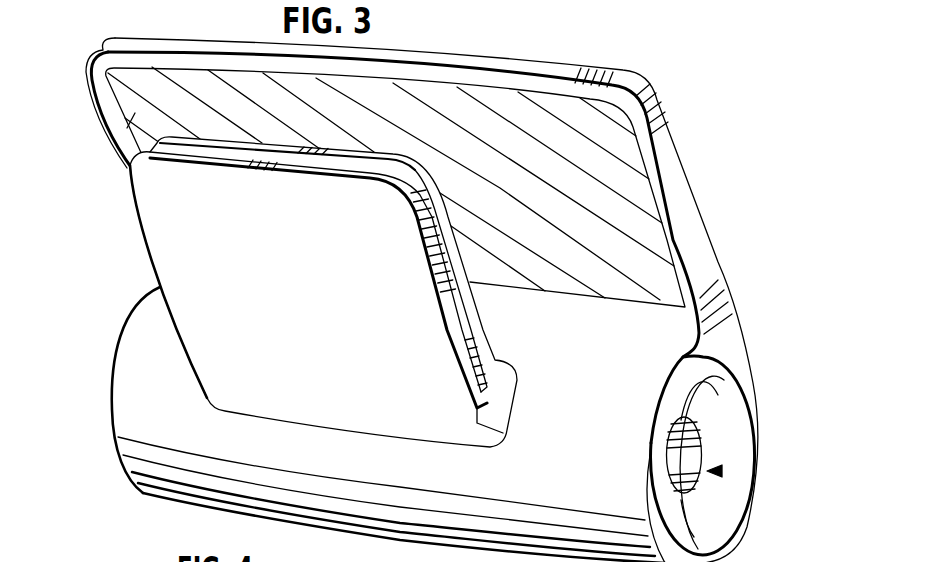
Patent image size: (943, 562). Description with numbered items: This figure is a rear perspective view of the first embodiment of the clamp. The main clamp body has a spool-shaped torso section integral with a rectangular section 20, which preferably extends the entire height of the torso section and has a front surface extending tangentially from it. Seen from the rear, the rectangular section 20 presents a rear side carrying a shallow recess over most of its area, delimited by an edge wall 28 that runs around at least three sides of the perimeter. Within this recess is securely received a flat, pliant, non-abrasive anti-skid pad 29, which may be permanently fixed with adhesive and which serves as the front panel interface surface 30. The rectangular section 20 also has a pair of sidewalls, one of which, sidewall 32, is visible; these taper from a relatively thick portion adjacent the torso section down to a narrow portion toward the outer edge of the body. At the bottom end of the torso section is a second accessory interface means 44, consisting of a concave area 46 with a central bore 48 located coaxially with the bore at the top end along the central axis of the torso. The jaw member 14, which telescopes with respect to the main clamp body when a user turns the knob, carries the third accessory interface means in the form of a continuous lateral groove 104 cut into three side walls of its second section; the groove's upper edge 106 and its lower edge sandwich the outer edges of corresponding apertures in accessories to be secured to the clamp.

The jaw member 14 is at (170, 247).
The rectangular section 20 is at (683, 210).
The edge wall 28 is at (408, 77).
The anti-skid pad 29 is at (125, 127).
The front panel interface surface 30 is at (593, 158).
The sidewall 32 is at (670, 167).
The second accessory interface means 44 is at (722, 471).
The concave area 46 is at (725, 502).
The central bore 48 is at (690, 462).
The lateral groove 104 is at (493, 338).
The upper edge 106 is at (473, 320).